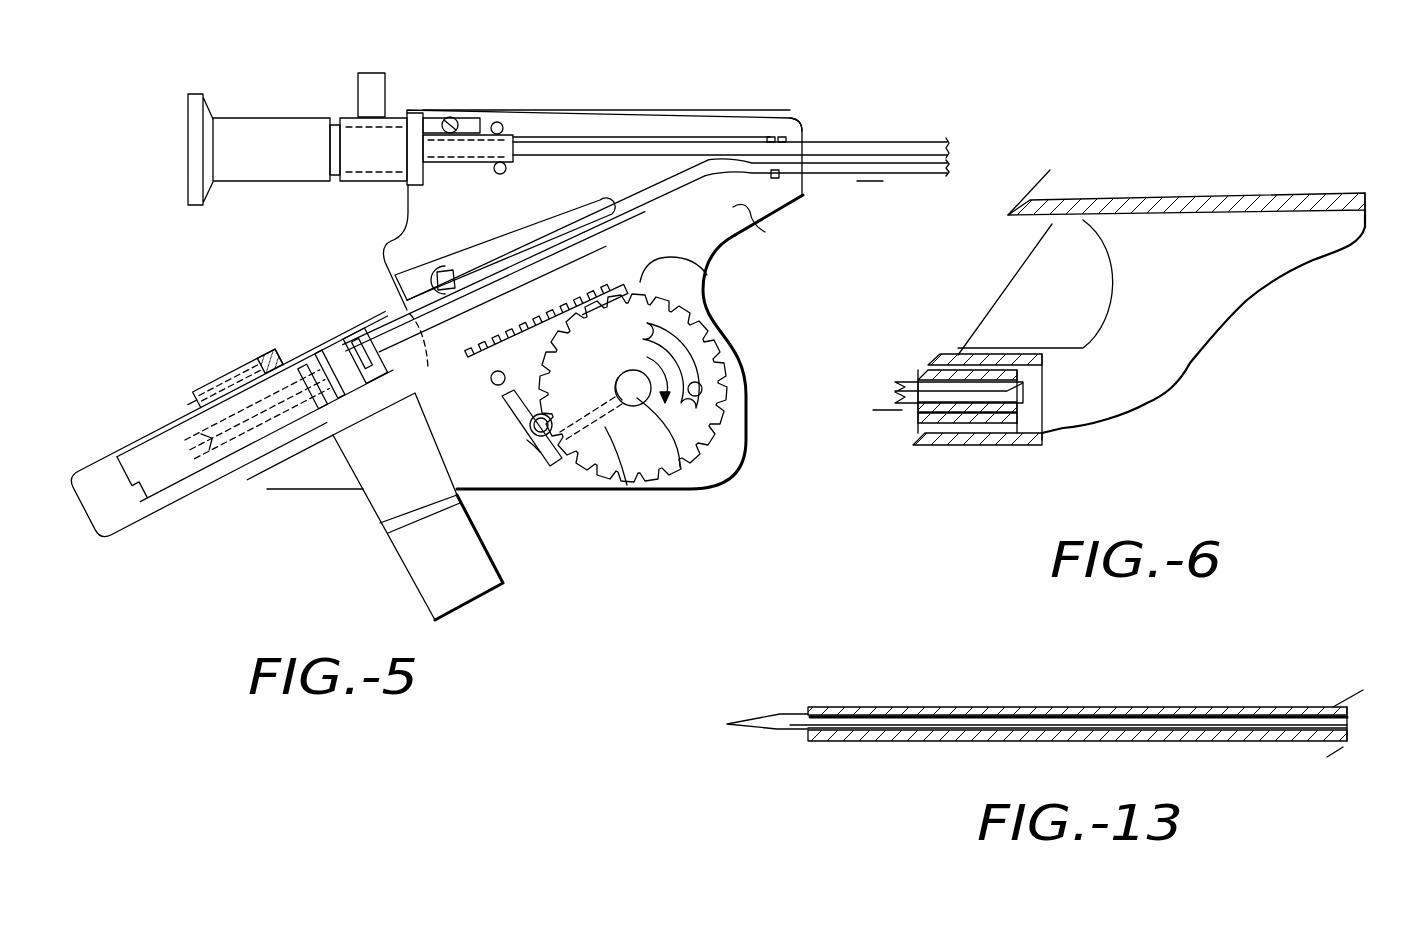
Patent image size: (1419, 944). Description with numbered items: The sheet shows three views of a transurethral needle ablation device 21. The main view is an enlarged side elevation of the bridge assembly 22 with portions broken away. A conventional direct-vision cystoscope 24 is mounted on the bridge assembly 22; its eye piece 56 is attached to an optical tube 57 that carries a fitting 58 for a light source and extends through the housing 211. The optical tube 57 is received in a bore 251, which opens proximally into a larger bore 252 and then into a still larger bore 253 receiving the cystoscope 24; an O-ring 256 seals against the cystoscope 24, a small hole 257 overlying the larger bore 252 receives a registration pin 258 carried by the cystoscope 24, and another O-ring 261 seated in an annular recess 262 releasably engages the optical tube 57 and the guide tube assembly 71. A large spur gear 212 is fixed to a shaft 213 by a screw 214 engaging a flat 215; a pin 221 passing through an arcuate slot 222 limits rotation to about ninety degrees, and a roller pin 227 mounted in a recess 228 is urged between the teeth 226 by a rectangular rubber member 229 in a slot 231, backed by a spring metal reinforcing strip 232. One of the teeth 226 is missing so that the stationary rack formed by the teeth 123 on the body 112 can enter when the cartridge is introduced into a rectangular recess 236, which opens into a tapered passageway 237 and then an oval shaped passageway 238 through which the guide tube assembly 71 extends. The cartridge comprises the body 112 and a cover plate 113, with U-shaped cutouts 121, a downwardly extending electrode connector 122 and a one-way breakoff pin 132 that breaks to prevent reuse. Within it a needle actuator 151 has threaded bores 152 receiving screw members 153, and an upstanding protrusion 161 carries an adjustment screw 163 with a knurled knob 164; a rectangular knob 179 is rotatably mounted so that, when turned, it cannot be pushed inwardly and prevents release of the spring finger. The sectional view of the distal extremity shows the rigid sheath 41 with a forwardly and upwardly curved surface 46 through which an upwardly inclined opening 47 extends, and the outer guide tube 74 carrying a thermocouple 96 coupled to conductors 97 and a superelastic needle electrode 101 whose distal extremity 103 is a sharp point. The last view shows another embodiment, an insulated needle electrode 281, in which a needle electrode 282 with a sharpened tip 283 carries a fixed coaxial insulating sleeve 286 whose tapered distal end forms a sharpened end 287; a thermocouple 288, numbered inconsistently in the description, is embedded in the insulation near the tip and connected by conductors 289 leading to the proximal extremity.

In FIG. 5, the transurethral needle ablation device 21 is at (866, 83).
In FIG. 5, the bridge assembly 22 is at (563, 103).
In FIG. 5, the cystoscope 24 is at (255, 113).
In FIG. 5, the eye piece 56 is at (233, 123).
In FIG. 5, the optical tube 57 is at (903, 143).
In FIG. 6, the optical tube 57 is at (1055, 230).
In FIG. 5, the fitting 58 is at (370, 82).
In FIG. 5, the guide tube assembly 71 is at (922, 168).
In FIG. 5, the body 112 is at (195, 483).
In FIG. 5, the cover plate 113 is at (125, 447).
In FIG. 5, the U-shaped cutouts 121 is at (158, 487).
In FIG. 5, the electrode connector 122 is at (380, 498).
In FIG. 5, the teeth 123 is at (495, 385).
In FIG. 5, the one-way breakoff pin 132 is at (453, 275).
In FIG. 5, the needle actuator 151 is at (273, 432).
In FIG. 5, the threaded aligned bores 152 is at (305, 350).
In FIG. 5, the screw members 153 is at (320, 375).
In FIG. 5, the upstanding protrusion 161 is at (194, 362).
In FIG. 5, the adjustment screw 163 is at (233, 373).
In FIG. 5, the knurled knob 164 is at (285, 358).
In FIG. 5, the knob 179 is at (205, 432).
In FIG. 5, the housing 211 is at (676, 108).
In FIG. 5, the large spur gear 212 is at (690, 440).
In FIG. 5, the shaft 213 is at (677, 487).
In FIG. 5, the screw 214 is at (608, 425).
In FIG. 5, the flat 215 is at (628, 375).
In FIG. 5, the pin 221 is at (702, 392).
In FIG. 5, the arcuate slot 222 is at (723, 367).
In FIG. 5, the teeth 226 is at (723, 340).
In FIG. 5, the roller pin 227 is at (545, 428).
In FIG. 5, the recess 228 is at (538, 340).
In FIG. 5, the rectangular rubber member 229 is at (530, 424).
In FIG. 5, the slot 231 is at (553, 470).
In FIG. 5, the spring metal reinforcing strip 232 is at (540, 420).
In FIG. 5, the rectangular recess 236 is at (723, 270).
In FIG. 5, the tapered passageway 237 is at (765, 228).
In FIG. 5, the oval shaped passageway 238 is at (812, 192).
In FIG. 5, the bore 251 is at (600, 137).
In FIG. 5, the larger bore 252 is at (465, 138).
In FIG. 5, the still larger bore 253 is at (352, 128).
In FIG. 5, the O-ring 256 is at (500, 124).
In FIG. 5, the small hole 257 is at (452, 115).
In FIG. 5, the registration pin 258 is at (440, 125).
In FIG. 5, the O-ring 261 is at (778, 134).
In FIG. 5, the annular recess 262 is at (764, 133).
In FIG. 6, the rigid sheath 41 is at (1233, 200).
In FIG. 6, the curved surface 46 is at (1245, 300).
In FIG. 6, the upwardly inclined opening 47 is at (1340, 220).
In FIG. 6, the outer guide tube 74 is at (1013, 418).
In FIG. 6, the thermocouple 96 is at (935, 443).
In FIG. 6, the conductors 97 is at (902, 412).
In FIG. 6, the needle electrode 101 is at (945, 388).
In FIG. 6, the distal extremity 103 is at (1042, 433).
In FIG. 13, the insulated needle electrode 281 is at (1065, 690).
In FIG. 13, the needle electrode 282 is at (936, 708).
In FIG. 13, the sharpened tip 283 is at (735, 717).
In FIG. 13, the fixed insulated sleeve 286 is at (1205, 705).
In FIG. 13, the sharpened end 287 is at (815, 733).
In FIG. 13, the upper sheath 288 is at (840, 708).
In FIG. 13, the conductors 289 is at (1348, 715).